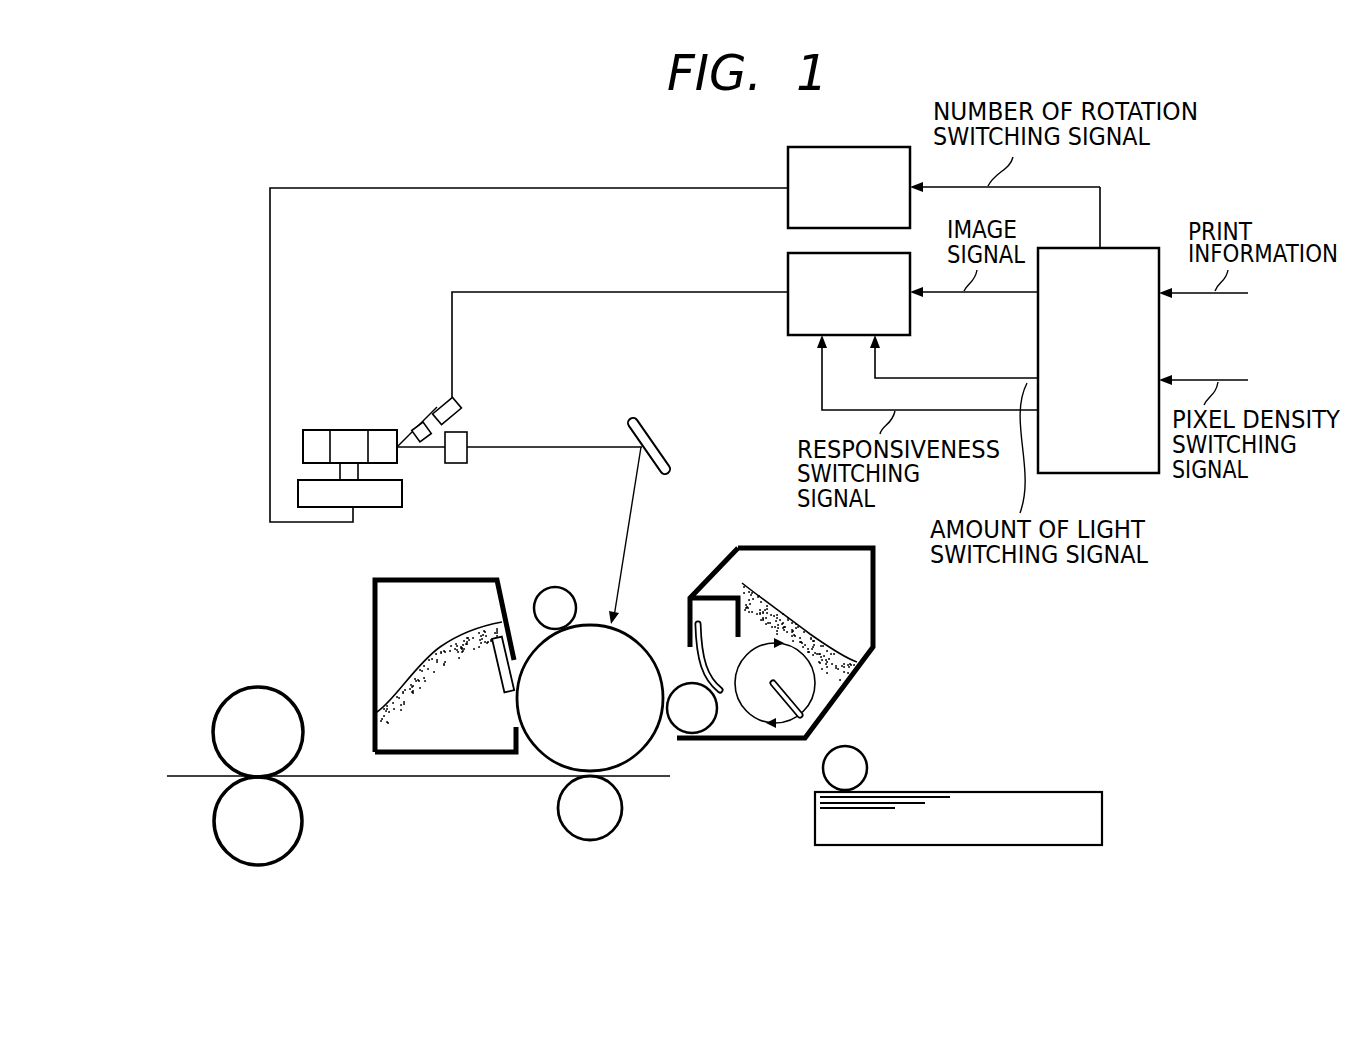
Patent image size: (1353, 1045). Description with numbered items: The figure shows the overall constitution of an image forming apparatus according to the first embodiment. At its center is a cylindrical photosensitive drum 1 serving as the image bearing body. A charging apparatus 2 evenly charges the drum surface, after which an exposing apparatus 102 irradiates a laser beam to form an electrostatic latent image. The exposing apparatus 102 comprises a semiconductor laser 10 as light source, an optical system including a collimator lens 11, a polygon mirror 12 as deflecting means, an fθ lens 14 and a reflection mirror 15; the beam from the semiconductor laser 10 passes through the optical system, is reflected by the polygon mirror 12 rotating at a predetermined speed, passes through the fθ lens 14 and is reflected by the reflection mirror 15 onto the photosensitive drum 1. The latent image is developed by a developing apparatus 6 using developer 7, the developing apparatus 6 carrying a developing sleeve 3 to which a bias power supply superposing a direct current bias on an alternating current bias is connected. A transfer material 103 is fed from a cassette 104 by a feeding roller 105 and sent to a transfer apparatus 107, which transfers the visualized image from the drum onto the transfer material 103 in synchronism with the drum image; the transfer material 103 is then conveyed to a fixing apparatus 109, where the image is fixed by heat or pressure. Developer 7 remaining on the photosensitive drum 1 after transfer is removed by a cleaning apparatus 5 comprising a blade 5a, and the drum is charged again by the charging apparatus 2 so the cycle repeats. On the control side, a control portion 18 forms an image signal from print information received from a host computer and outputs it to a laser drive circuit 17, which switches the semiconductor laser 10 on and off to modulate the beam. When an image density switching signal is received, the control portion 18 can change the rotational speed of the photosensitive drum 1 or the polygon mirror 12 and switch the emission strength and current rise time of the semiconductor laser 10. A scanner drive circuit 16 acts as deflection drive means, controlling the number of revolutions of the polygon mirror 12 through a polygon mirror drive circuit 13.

The photosensitive drum 1 is at (548, 748).
The charging apparatus 2 is at (558, 587).
The developing sleeve 3 is at (692, 725).
The cleaning apparatus 5 is at (375, 647).
The blade 5a is at (500, 672).
The developing apparatus 6 is at (875, 602).
The developer 7 is at (780, 597).
The semiconductor laser 10 is at (460, 416).
The collimator lens 11 is at (418, 425).
The polygon mirror 12 is at (342, 430).
The polygon mirror drive circuit 13 is at (385, 508).
The fθ lens 14 is at (460, 466).
The reflection mirror 15 is at (646, 432).
The scanner drive circuit 16 is at (788, 155).
The laser drive circuit 17 is at (788, 262).
The control portion 18 is at (1128, 248).
The exposing apparatus 102 is at (476, 382).
The transfer material 103 is at (352, 777).
The cassette 104 is at (940, 845).
The feeding roller 105 is at (850, 753).
The transfer apparatus 107 is at (590, 830).
The fixing apparatus 109 is at (255, 690).